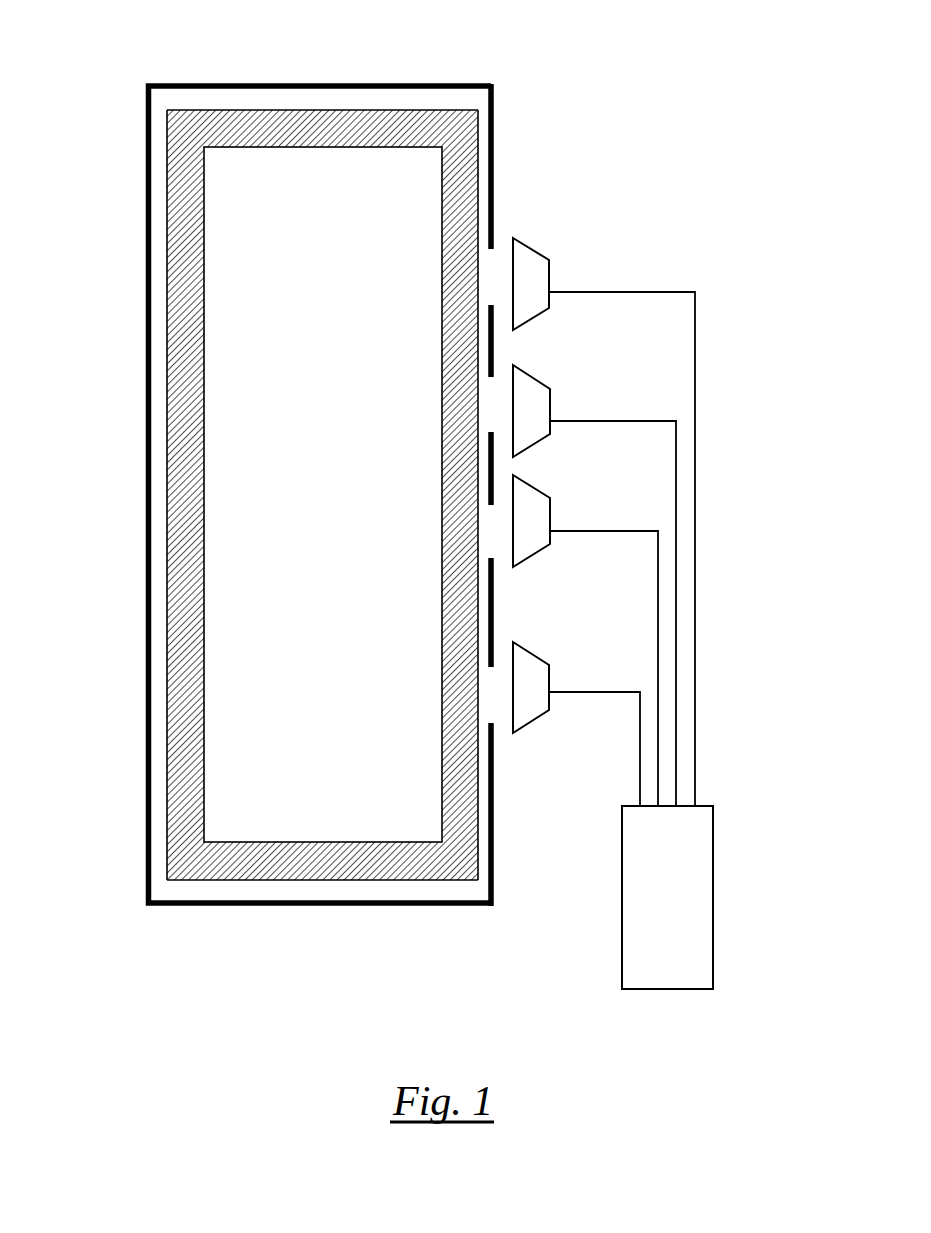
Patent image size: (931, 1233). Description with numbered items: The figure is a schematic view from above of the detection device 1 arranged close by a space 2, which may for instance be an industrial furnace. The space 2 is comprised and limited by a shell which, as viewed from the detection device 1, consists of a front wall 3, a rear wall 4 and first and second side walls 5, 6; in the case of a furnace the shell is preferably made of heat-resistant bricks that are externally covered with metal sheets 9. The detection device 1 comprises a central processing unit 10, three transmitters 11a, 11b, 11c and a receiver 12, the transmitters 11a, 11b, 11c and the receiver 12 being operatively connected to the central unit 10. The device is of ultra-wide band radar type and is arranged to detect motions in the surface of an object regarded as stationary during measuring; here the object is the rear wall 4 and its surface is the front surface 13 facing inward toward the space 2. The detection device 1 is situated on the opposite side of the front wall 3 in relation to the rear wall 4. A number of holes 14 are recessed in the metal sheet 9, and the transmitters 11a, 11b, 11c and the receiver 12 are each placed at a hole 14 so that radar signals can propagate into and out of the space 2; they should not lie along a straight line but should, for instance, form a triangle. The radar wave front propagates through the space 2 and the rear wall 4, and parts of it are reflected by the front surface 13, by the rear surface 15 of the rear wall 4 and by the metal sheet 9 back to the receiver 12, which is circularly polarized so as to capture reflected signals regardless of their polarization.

The detection device 1 is at (730, 464).
The space 2 is at (382, 177).
The front wall 3 is at (466, 150).
The rear wall 4 is at (185, 175).
The first side wall 5 is at (300, 880).
The second side wall 6 is at (308, 118).
The metal sheets 9 is at (172, 905).
The central processing unit 10 is at (689, 887).
The first transmitter 11a is at (527, 287).
The second transmitter 11b is at (527, 412).
The third transmitter 11c is at (527, 521).
The receiver 12 is at (527, 685).
The front surface 13 is at (205, 358).
The holes 14 is at (493, 268).
The rear surface 15 is at (167, 503).